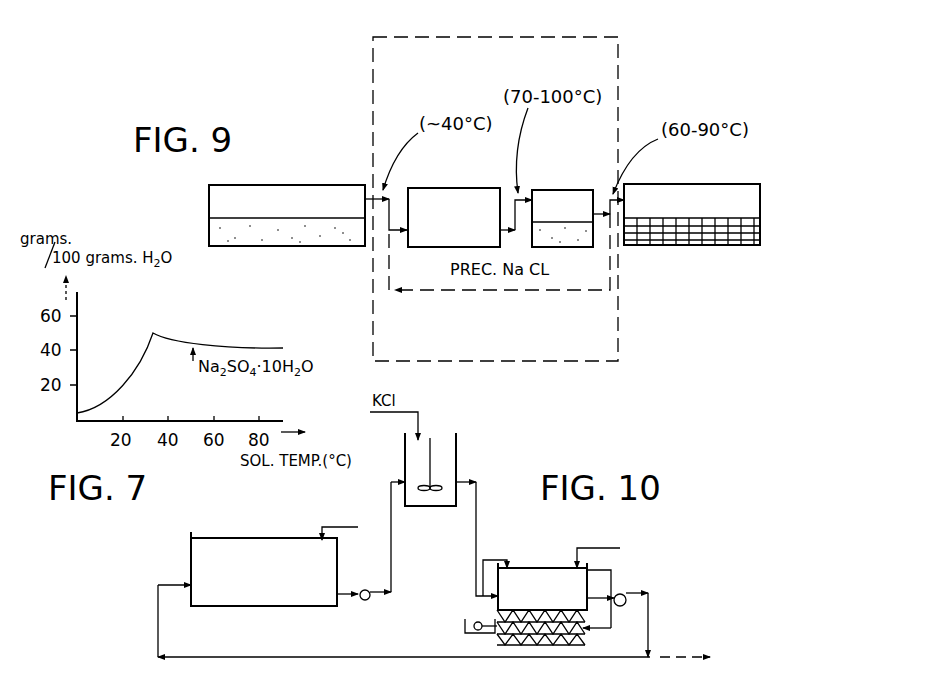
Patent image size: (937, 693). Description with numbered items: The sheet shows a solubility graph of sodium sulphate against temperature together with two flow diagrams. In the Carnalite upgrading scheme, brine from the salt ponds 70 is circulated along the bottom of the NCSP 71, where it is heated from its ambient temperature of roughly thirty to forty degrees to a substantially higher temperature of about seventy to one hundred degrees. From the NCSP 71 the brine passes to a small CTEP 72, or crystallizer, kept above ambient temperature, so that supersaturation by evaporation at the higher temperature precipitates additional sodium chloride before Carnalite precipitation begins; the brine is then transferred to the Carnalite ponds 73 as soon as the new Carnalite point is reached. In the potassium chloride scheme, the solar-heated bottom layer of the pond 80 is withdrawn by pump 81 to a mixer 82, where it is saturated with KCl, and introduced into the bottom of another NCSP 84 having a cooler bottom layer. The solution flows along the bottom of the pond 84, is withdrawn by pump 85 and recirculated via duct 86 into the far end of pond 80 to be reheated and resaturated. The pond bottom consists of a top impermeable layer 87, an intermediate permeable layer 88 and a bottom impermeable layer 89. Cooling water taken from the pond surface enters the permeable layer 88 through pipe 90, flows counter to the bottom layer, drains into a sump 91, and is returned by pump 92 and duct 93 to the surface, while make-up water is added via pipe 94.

In FIG. 9, the salt ponds 70 is at (216, 217).
In FIG. 9, the NCSP 71 is at (437, 202).
In FIG. 9, the CTEP 72 is at (548, 203).
In FIG. 9, the Carnalite ponds 73 is at (738, 198).
In FIG. 10, the pond 80 is at (226, 550).
In FIG. 10, the pump 81 is at (366, 600).
In FIG. 10, the mixer 82 is at (448, 457).
In FIG. 10, the NCSP 84 is at (528, 578).
In FIG. 10, the pump 85 is at (627, 603).
In FIG. 10, the duct 86 is at (302, 657).
In FIG. 10, the top impermeable layer 87 is at (496, 616).
In FIG. 10, the intermediate permeable layer 88 is at (613, 629).
In FIG. 10, the bottom impermeable layer 89 is at (550, 640).
In FIG. 10, the pipe 90 is at (612, 570).
In FIG. 10, the sump 91 is at (465, 626).
In FIG. 10, the pump 92 is at (470, 634).
In FIG. 10, the duct 93 is at (492, 564).
In FIG. 10, the pipe 94 is at (598, 548).